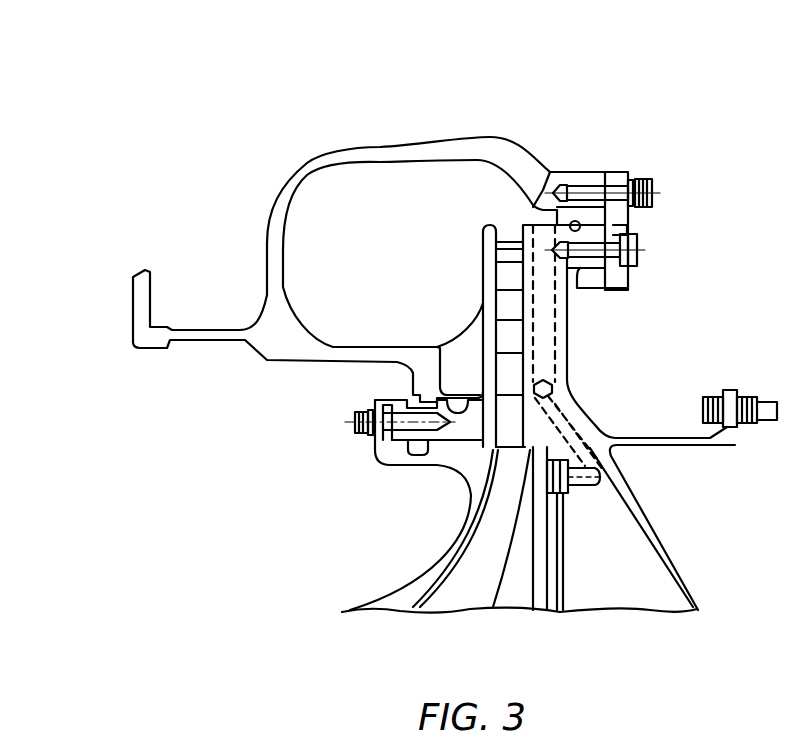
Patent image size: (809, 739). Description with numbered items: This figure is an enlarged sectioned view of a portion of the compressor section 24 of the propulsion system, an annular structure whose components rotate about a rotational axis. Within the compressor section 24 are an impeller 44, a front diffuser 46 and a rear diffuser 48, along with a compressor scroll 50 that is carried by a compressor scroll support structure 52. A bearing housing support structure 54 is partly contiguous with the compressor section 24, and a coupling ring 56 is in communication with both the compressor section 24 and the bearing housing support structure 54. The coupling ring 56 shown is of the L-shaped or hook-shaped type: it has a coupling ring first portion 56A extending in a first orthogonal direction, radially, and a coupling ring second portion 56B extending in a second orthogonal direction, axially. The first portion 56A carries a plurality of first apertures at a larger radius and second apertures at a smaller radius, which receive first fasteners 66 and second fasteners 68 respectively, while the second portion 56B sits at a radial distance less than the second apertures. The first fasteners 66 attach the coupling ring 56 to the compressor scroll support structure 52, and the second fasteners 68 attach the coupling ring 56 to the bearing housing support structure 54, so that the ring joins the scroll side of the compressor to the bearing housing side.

The compressor section 24 is at (622, 110).
The impeller 44 is at (473, 582).
The front diffuser 46 is at (453, 440).
The rear diffuser 48 is at (502, 340).
The compressor scroll 50 is at (327, 155).
The compressor scroll support structure 52 is at (545, 182).
The bearing housing support structure 54 is at (547, 343).
The coupling ring 56 is at (659, 215).
The coupling ring first portion 56A is at (617, 170).
The coupling ring second portion 56B is at (600, 282).
The first fasteners 66 is at (653, 185).
The second fasteners 68 is at (642, 220).